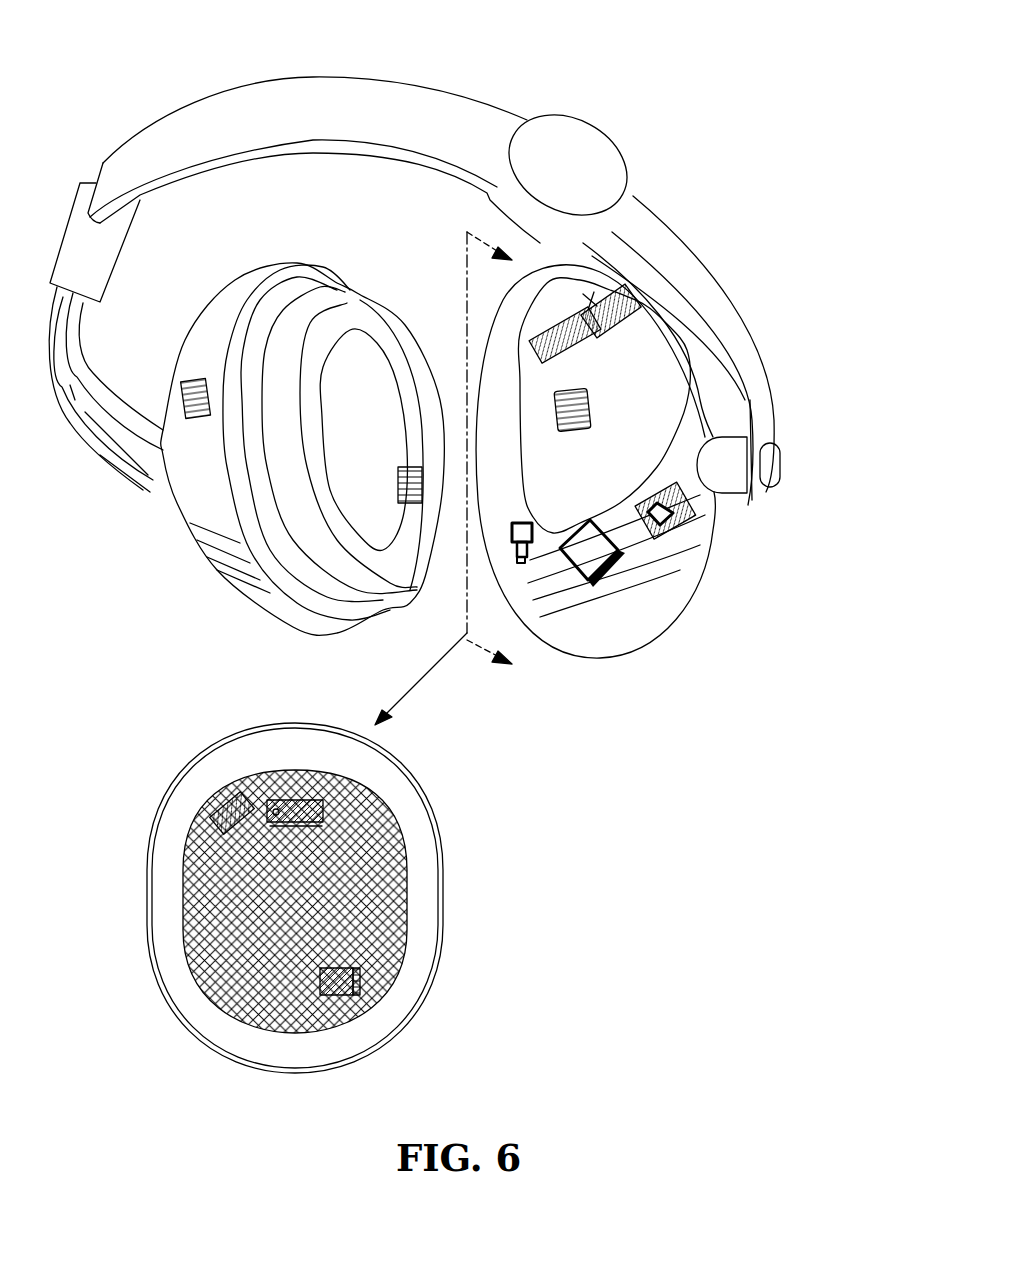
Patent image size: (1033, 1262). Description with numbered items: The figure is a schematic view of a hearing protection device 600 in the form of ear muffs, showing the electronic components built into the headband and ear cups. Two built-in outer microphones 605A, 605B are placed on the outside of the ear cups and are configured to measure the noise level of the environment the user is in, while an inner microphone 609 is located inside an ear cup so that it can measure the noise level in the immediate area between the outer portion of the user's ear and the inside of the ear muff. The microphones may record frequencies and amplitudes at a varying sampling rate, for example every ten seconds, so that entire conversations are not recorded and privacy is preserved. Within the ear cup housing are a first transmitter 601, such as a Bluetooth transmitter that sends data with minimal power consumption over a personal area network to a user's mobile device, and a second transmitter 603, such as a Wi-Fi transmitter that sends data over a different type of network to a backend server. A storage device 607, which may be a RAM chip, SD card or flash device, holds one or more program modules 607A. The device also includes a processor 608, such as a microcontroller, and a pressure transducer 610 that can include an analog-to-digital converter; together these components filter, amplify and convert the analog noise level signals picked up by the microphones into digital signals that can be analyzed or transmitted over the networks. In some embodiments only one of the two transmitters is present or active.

The hearing protection device 600 is at (163, 67).
The first transmitter 601 is at (583, 345).
The second transmitter 603 is at (615, 300).
The outer microphone 605A is at (592, 403).
The outer microphone 605B is at (190, 417).
The storage device 607 is at (673, 537).
The program module 607A is at (677, 503).
The processor 608 is at (610, 570).
The inner microphone 609 is at (413, 503).
The pressure transducer 610 is at (523, 563).